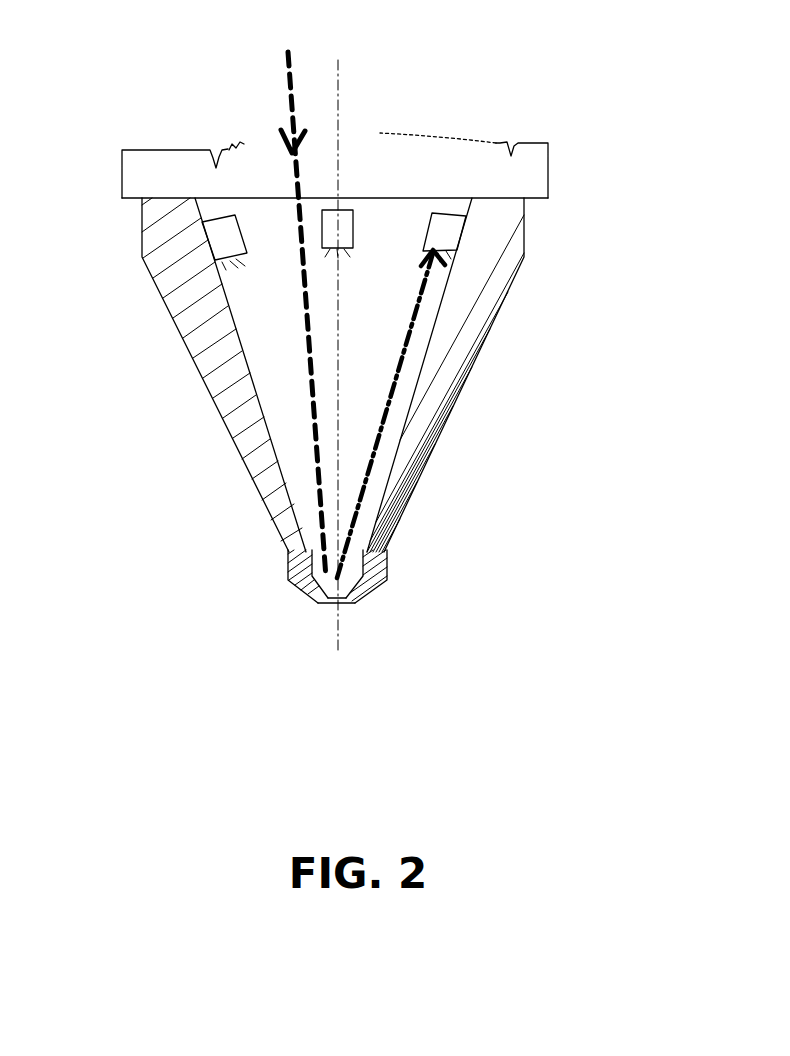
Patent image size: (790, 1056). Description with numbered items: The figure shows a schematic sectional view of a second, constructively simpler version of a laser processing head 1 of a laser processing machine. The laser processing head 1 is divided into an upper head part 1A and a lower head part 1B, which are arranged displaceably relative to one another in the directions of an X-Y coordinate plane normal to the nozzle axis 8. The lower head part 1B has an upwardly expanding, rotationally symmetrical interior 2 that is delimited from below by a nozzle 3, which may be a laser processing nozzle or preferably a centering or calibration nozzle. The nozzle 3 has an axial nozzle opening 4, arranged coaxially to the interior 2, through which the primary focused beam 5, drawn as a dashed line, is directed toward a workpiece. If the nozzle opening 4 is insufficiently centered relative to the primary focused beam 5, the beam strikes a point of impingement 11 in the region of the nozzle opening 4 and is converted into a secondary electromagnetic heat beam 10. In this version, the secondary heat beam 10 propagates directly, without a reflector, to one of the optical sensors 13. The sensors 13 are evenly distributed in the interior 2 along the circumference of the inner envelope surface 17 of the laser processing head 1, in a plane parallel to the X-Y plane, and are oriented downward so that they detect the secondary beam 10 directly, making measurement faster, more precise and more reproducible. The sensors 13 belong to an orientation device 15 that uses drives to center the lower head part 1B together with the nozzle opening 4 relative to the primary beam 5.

The laser processing head 1 is at (175, 109).
The upper head part 1A is at (483, 143).
The lower head part 1B is at (494, 435).
The interior 2 is at (376, 312).
The nozzle 3 is at (382, 582).
The nozzle opening 4 is at (340, 603).
The primary focused beam 5 is at (290, 80).
The nozzle axis 8 is at (337, 620).
The secondary electromagnetic beam 10 is at (377, 440).
The point of impingement 11 is at (327, 580).
The sensors 13 is at (447, 233).
The orientation device 15 is at (581, 205).
The inner envelope surface 17 is at (250, 285).